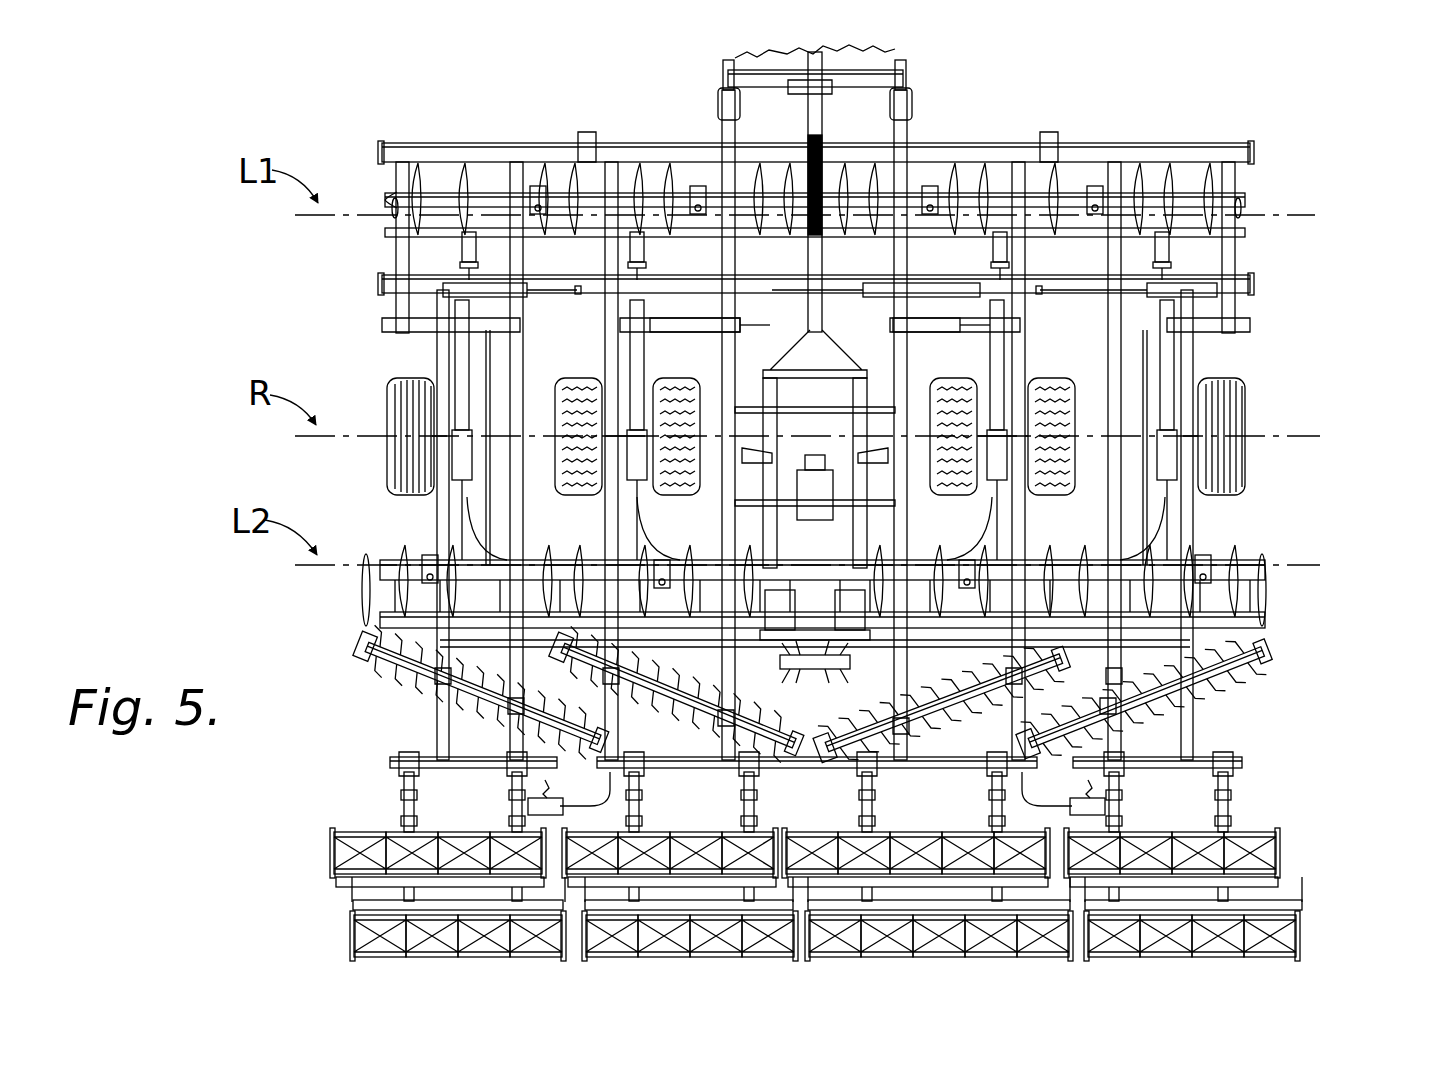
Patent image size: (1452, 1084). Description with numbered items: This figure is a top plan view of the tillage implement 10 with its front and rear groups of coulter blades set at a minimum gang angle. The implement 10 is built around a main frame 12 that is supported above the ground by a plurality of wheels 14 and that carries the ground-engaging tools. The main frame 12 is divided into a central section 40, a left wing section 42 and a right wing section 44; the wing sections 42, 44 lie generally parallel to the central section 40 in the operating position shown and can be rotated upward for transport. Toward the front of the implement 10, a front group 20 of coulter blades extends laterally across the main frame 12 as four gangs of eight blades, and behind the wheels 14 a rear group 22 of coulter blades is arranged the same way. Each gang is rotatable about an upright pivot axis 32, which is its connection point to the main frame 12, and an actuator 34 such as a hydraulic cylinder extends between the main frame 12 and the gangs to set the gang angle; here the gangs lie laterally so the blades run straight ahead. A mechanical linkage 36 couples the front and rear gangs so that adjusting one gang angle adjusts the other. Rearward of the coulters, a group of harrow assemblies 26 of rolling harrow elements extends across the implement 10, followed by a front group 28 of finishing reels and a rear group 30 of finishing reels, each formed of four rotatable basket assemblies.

The tillage implement 10 is at (1332, 125).
The main frame 12 is at (1185, 352).
The wheels 14 is at (1265, 418).
The front group of coulter blades 20 is at (1270, 190).
The rear group of coulter blades 22 is at (1287, 607).
The group of harrow assemblies 26 is at (1260, 698).
The front group of finishing reels 28 is at (1292, 835).
The rear group of finishing reels 30 is at (1318, 912).
The upright pivot axis 32 is at (538, 205).
The actuator 34 is at (467, 250).
The mechanical linkage 36 is at (492, 380).
The central section 40 is at (708, 75).
The left wing section 42 is at (405, 95).
The right wing section 44 is at (1205, 103).